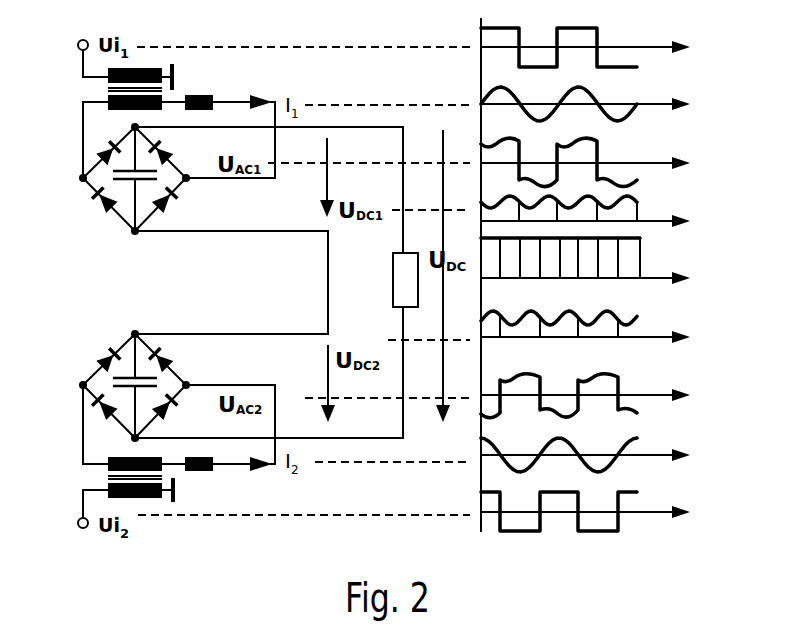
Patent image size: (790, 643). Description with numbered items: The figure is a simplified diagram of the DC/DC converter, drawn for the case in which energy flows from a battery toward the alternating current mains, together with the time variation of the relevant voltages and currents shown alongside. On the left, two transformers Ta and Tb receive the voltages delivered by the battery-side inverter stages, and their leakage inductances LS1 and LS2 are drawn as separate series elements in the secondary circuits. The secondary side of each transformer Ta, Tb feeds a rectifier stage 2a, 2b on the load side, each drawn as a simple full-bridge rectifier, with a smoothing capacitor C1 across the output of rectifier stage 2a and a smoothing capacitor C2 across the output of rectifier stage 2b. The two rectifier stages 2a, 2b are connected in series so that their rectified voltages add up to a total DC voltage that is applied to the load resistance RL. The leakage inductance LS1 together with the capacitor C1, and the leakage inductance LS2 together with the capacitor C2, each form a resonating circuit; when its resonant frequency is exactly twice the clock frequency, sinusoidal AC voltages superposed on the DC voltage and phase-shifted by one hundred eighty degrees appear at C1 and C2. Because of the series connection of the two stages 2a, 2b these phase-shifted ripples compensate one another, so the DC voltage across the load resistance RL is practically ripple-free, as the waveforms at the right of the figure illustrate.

The rectifier stage 2a is at (126, 181).
The rectifier stage 2b is at (126, 386).
The smoothing capacitor C1 is at (109, 225).
The smoothing capacitor C2 is at (109, 343).
The transformer Ta is at (109, 87).
The transformer Tb is at (112, 479).
The leakage inductance LS1 is at (201, 91).
The leakage inductance LS2 is at (201, 480).
The load resistance RL is at (390, 280).